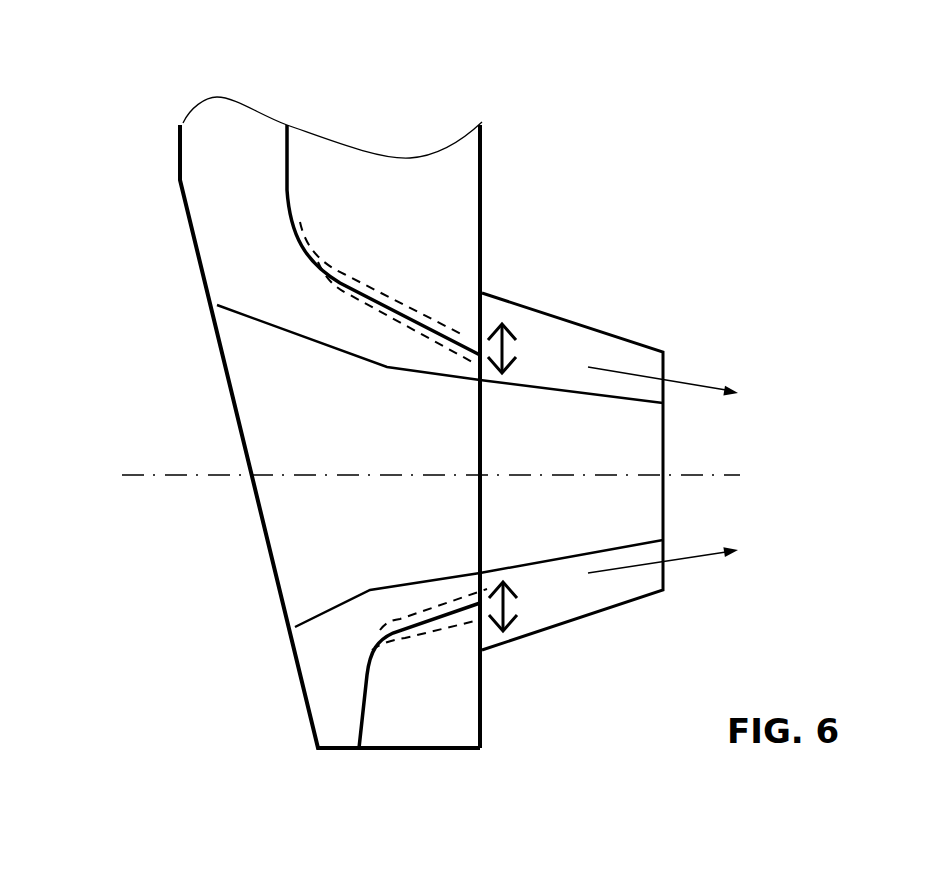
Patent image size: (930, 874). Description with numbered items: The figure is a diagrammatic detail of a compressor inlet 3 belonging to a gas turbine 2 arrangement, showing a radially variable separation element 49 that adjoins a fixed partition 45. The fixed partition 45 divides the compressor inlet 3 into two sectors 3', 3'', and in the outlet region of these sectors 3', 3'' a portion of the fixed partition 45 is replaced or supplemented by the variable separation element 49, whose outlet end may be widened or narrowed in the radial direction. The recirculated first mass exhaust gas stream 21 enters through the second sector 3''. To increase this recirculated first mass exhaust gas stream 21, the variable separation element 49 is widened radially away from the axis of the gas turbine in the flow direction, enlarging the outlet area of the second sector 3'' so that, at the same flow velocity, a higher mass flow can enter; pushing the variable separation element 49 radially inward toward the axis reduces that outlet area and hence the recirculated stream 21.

The turbine blade 2 is at (285, 35).
The compressor inlet 3 is at (571, 400).
The first sector 3' is at (365, 162).
The second sector 3'' is at (371, 460).
The recirculated first mass exhaust gas stream 21 is at (243, 116).
The fixed partition 45 is at (285, 225).
The variable separation element 49 is at (453, 342).